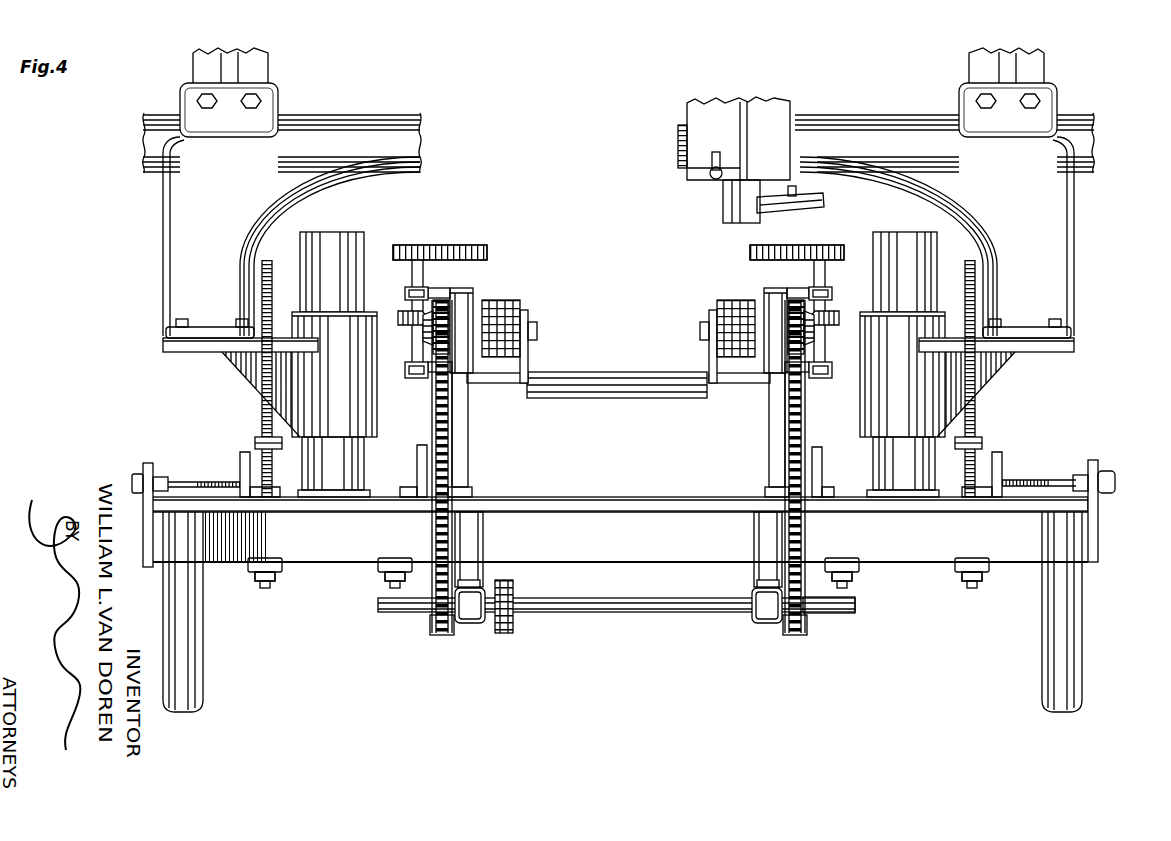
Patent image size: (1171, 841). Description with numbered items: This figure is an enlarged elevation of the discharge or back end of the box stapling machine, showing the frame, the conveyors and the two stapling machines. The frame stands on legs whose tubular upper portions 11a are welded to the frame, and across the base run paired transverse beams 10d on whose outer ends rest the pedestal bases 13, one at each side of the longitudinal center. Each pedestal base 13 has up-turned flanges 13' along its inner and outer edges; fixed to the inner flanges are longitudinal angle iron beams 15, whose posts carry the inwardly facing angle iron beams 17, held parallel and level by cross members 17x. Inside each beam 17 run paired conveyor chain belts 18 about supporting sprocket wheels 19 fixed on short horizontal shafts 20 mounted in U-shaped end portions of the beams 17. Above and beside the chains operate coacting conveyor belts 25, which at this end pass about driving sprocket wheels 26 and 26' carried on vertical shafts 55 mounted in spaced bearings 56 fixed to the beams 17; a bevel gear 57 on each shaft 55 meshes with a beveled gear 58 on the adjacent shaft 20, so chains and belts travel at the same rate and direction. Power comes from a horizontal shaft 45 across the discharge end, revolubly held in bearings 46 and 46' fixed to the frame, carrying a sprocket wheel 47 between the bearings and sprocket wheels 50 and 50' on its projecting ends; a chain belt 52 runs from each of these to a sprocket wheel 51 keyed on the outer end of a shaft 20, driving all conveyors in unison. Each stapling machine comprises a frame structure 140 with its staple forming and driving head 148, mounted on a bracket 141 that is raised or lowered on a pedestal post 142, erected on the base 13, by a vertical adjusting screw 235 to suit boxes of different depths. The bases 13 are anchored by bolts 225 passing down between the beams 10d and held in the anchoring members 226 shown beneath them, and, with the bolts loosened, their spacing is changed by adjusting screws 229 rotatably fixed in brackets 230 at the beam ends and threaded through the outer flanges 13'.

The transverse beam 10d is at (668, 548).
The tubular upper portion of leg 11a is at (190, 673).
The pedestal base 13 is at (620, 519).
The up-turned flange 13' is at (620, 453).
The angle iron beam 15 is at (425, 487).
The inwardly facing angle iron beam 17 is at (480, 368).
The cross member 17x is at (617, 400).
The conveyor chain belt 18 is at (498, 300).
The supporting sprocket wheel 19 is at (527, 315).
The horizontal shaft 20 is at (538, 331).
The conveyor belt 25 is at (445, 245).
The driving sprocket wheel 26 is at (425, 231).
The driving sprocket wheel 26' is at (816, 229).
The shaft 45 is at (620, 615).
The supporting bearing 46 is at (482, 606).
The supporting bearing 46' is at (774, 591).
The sprocket wheel 47 is at (505, 633).
The sprocket wheel 50 is at (442, 652).
The sprocket wheel 50' is at (827, 643).
The sprocket wheel 51 is at (448, 306).
The chain belt 52 is at (430, 580).
The vertical shaft 55 is at (412, 272).
The bearing 56 is at (405, 295).
The bevel gear 57 is at (408, 322).
The beveled gear 58 is at (423, 340).
The frame structure 140 is at (178, 193).
The bracket 141 is at (206, 350).
The pedestal post 142 is at (319, 456).
The staple forming and driving head 148 is at (732, 196).
The anchor bolt 225 is at (269, 591).
The bracket 226 is at (256, 567).
The adjusting screw 229 is at (186, 477).
The bracket 230 is at (141, 475).
The vertical adjusting screw 235 is at (262, 400).